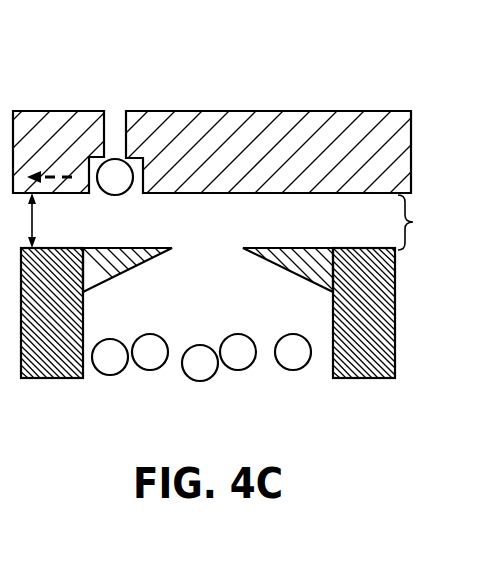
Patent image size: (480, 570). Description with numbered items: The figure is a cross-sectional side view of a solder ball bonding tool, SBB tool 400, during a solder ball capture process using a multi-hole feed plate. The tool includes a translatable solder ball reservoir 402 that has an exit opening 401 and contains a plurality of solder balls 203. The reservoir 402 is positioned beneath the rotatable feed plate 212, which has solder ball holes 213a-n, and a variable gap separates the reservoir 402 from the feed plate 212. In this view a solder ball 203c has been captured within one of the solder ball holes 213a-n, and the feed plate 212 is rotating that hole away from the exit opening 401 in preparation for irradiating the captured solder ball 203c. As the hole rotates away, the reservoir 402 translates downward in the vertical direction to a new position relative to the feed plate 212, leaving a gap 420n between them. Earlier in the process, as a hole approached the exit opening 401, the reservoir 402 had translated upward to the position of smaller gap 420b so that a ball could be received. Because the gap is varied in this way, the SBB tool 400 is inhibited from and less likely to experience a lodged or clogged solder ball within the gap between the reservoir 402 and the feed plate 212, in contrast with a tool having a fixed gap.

The SBB tool 400 is at (263, 72).
The rotatable feed plate 212 is at (411, 150).
The solder ball 203c is at (115, 164).
The solder ball holes 213a-n is at (97, 165).
The smaller gap 420b is at (18, 228).
The gap 420n is at (432, 222).
The exit opening 401 is at (205, 243).
The translatable solder ball reservoir 402 is at (365, 370).
The solder balls 203 is at (315, 373).